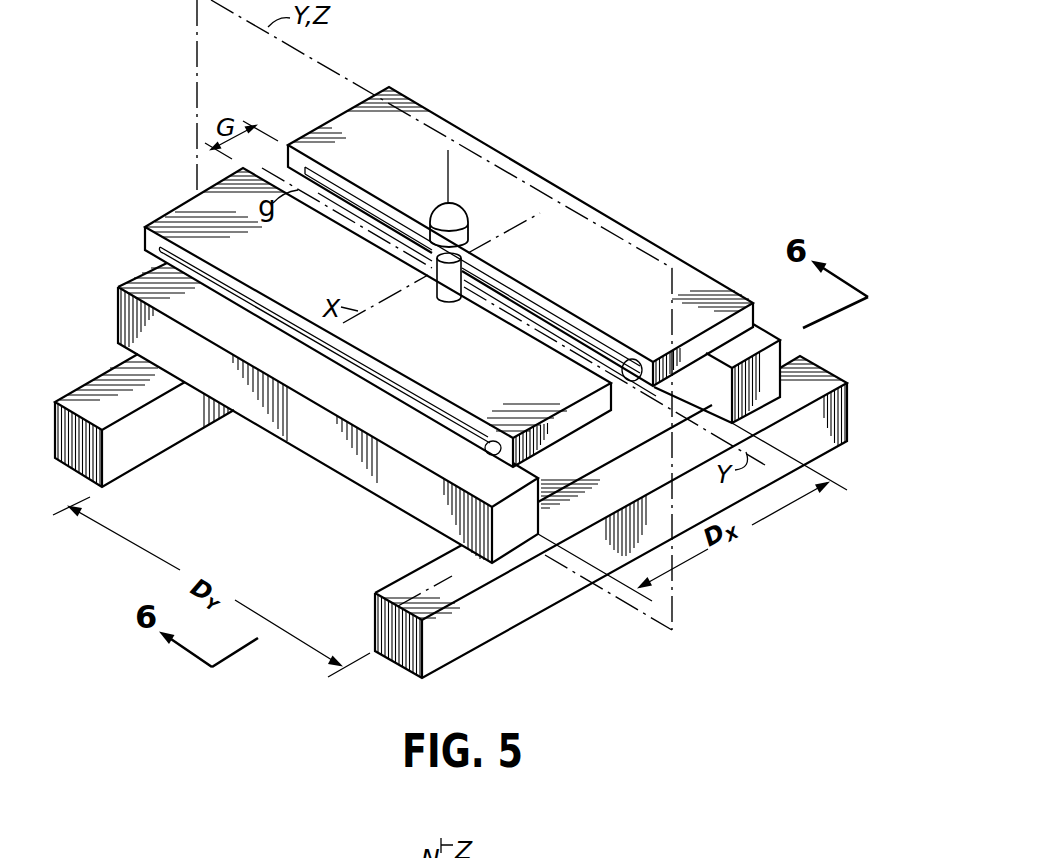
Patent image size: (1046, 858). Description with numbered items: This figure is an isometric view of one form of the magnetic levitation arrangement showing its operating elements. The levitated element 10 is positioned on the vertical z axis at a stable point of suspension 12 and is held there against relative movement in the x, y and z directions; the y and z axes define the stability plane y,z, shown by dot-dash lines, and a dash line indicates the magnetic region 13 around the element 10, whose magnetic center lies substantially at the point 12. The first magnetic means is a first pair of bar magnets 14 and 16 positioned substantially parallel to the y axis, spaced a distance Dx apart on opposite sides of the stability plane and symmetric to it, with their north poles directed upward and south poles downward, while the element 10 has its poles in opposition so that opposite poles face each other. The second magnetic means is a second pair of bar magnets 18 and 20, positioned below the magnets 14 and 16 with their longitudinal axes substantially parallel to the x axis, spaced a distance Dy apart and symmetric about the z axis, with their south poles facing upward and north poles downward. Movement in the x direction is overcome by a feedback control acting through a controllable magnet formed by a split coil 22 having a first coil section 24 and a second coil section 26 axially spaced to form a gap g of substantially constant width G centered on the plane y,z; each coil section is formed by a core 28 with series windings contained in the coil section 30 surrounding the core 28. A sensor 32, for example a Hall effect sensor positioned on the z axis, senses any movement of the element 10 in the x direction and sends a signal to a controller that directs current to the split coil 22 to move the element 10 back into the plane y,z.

The levitated element 10 is at (472, 205).
The stable point of suspension 12 is at (470, 224).
The magnetic region 13 is at (462, 205).
The bar magnet 14 is at (308, 437).
The bar magnet 16 is at (778, 355).
The bar magnet 18 is at (182, 430).
The bar magnet 20 is at (513, 613).
The split coil 22 is at (414, 96).
The first coil section 24 is at (286, 259).
The second coil section 26 is at (366, 146).
The core 28 is at (567, 326).
The coil section 30 is at (626, 359).
The sensor 32 is at (447, 297).